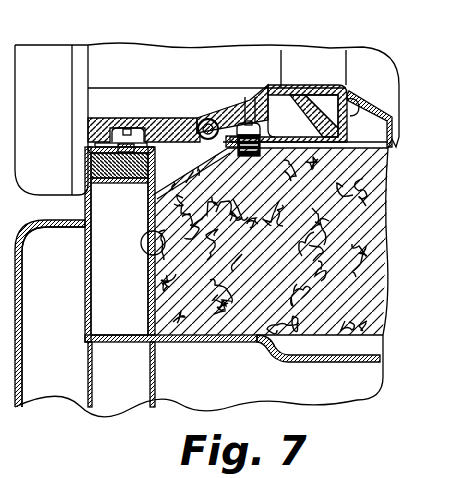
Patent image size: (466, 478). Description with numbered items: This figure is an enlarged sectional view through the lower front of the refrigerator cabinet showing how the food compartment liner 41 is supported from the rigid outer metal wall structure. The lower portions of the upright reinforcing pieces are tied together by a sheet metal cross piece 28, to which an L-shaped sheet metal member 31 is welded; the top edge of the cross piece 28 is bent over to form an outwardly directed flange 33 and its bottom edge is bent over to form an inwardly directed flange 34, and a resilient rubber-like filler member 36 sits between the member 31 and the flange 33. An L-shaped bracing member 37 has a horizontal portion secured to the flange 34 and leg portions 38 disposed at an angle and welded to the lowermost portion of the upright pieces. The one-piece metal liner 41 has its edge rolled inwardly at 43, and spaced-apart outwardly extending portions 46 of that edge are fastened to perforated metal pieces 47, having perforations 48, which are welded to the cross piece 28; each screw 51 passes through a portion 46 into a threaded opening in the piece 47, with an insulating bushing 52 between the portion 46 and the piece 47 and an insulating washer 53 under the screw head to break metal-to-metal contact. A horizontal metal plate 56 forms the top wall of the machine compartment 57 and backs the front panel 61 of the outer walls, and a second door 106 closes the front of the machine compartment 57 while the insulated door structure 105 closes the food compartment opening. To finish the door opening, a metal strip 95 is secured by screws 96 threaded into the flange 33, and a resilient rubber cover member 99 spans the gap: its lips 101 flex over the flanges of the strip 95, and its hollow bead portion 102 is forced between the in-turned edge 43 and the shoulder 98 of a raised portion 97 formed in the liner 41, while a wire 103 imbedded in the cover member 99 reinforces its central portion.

The insulated door structure 105 is at (148, 60).
The lips 101 is at (87, 140).
The metal strip 95 is at (92, 120).
The screws 96 is at (133, 120).
The wire 103 is at (200, 127).
The bushing 52 is at (203, 131).
The insulating washer 53 is at (220, 121).
The cover member 99 is at (248, 96).
The screw 51 is at (236, 100).
The outwardly extending portions 46 is at (256, 98).
The inwardly bent edge 43 is at (275, 112).
The hollow bead portion 102 is at (316, 106).
The shoulder 98 is at (358, 110).
The raised portion 97 is at (390, 125).
The perforations 48 is at (195, 168).
The liner 41 is at (389, 149).
The outwardly directed flange 33 is at (92, 161).
The filler member 36 is at (93, 176).
The L-shaped sheet metal member 31 is at (147, 203).
The cross piece 28 is at (147, 277).
The metal pieces 47 is at (152, 248).
The front panel 61 is at (88, 287).
The second door 106 is at (22, 340).
The inwardly directed flange 34 is at (212, 342).
The bracing member 37 is at (147, 357).
The metal plate 56 is at (243, 347).
The machine compartment 57 is at (353, 378).
The leg portions 38 is at (178, 403).